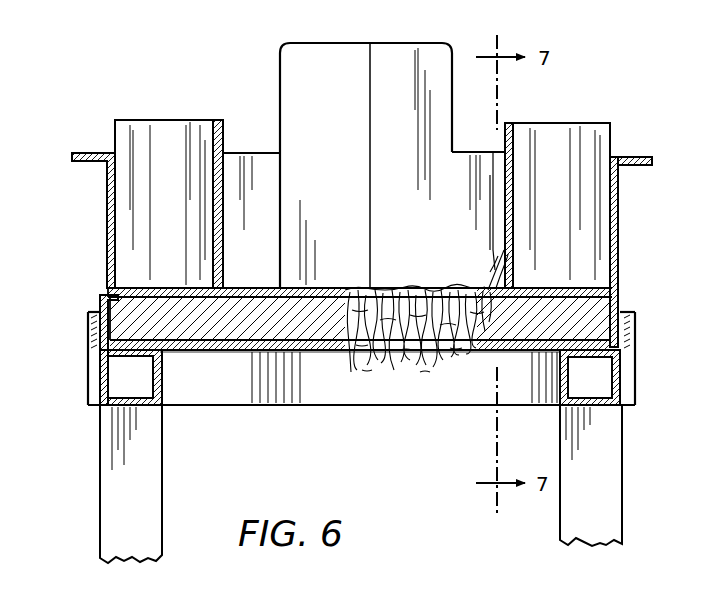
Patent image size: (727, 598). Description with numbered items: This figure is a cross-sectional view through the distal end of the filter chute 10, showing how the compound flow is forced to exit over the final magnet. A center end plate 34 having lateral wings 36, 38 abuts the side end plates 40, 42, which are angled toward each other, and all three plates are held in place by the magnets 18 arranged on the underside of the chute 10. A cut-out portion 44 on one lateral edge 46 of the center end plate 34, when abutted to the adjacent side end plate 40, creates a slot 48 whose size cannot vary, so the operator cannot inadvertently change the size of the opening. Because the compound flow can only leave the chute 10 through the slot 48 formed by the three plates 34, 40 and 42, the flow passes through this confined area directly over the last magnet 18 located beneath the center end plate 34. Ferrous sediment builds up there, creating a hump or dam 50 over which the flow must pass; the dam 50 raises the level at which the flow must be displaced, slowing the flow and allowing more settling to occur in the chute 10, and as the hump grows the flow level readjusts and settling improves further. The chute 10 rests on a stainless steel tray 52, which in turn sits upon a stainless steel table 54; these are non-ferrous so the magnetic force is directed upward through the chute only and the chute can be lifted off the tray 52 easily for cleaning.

The chute 10 is at (624, 246).
The magnets 18 is at (582, 318).
The center end plate 34 is at (403, 68).
The lateral wing 36 is at (490, 160).
The lateral wing 38 is at (260, 160).
The side end plate 40 is at (571, 150).
The side end plate 42 is at (184, 157).
The cut-out portion 44 is at (496, 197).
The lateral edge 46 is at (506, 166).
The slot 48 is at (500, 221).
The dam 50 is at (385, 290).
The tray 52 is at (102, 317).
The table 54 is at (345, 392).